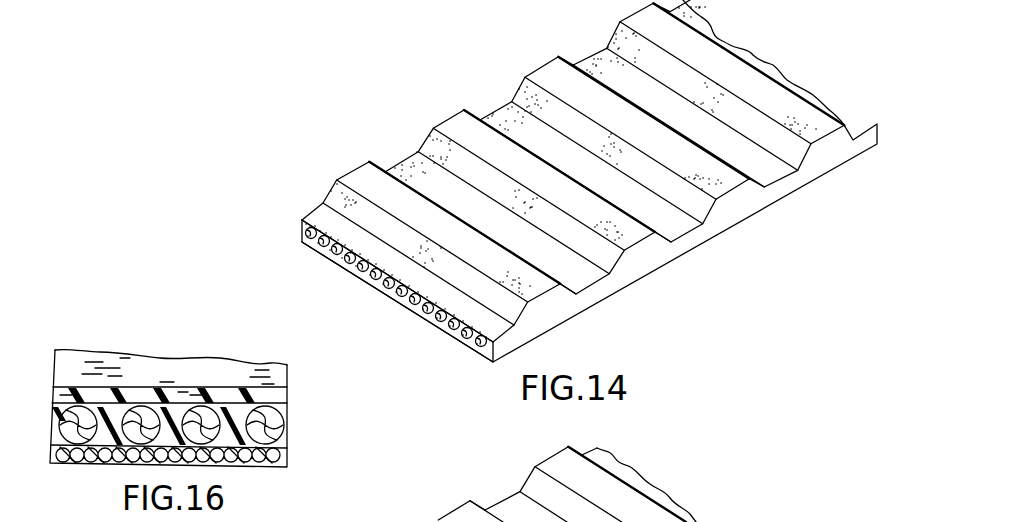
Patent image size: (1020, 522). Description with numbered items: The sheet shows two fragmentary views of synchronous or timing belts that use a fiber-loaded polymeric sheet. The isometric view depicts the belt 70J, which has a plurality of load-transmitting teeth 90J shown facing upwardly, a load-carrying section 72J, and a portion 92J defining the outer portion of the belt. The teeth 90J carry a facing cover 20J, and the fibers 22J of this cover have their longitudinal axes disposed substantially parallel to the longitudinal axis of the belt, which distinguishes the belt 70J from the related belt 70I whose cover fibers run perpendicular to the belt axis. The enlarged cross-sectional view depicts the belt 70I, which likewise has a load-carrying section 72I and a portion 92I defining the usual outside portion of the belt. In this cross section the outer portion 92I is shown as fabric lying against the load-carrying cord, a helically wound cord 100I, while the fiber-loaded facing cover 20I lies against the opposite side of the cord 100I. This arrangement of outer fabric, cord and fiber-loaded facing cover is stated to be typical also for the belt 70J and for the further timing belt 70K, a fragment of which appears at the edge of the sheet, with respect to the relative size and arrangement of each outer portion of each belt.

In FIG. 16, the belt 70I is at (163, 340).
In FIG. 14, the belt 70J is at (780, 48).
In FIG. 14, the belt 70K is at (707, 488).
In FIG. 16, the facing cover 20I is at (230, 387).
In FIG. 14, the facing cover 20J is at (452, 125).
In FIG. 14, the fibers 22J is at (396, 166).
In FIG. 14, the load-carrying section 72I is at (340, 0).
In FIG. 14, the load-carrying section 72J is at (297, 228).
In FIG. 14, the load-transmitting teeth 90J is at (640, 248).
In FIG. 16, the outside portion 92I is at (292, 460).
In FIG. 14, the outer portion 92J is at (470, 350).
In FIG. 16, the helically wound cord 100I is at (270, 421).